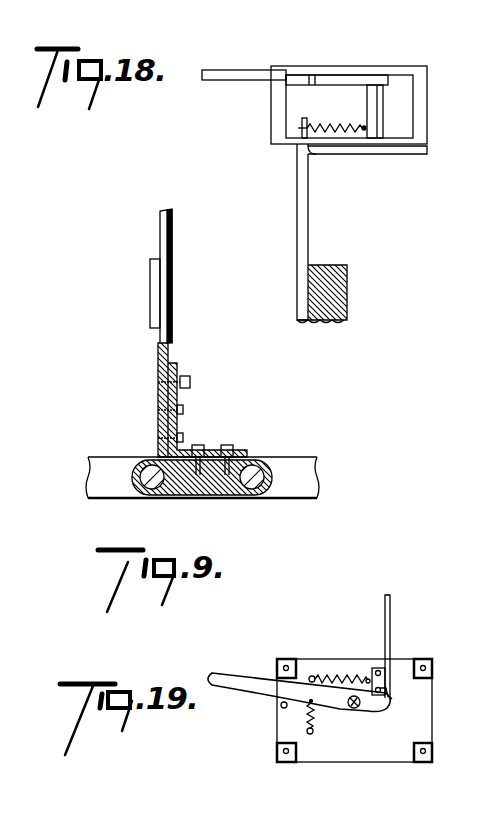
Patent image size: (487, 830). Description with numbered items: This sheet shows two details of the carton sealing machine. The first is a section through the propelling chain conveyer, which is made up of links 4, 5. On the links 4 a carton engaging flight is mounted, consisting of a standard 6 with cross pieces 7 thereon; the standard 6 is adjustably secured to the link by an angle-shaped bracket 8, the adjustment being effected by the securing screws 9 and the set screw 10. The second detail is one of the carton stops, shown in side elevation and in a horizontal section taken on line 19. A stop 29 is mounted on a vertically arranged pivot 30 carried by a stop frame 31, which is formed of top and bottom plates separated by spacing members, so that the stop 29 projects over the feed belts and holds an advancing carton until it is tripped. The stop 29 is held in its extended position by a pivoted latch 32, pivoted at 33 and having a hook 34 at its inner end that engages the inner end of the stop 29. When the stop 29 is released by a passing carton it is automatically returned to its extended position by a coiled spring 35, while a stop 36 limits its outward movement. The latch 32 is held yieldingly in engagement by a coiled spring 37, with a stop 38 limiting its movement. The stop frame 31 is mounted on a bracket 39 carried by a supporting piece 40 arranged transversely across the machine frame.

In FIG. 9, the links 4 is at (253, 459).
In FIG. 9, the links 5 is at (293, 466).
In FIG. 9, the standard 6 is at (167, 327).
In FIG. 9, the cross pieces 7 is at (155, 295).
In FIG. 9, the angle-shaped brackets 8 is at (182, 448).
In FIG. 9, the securing screws 9 is at (158, 438).
In FIG. 9, the set screw 10 is at (189, 379).
In FIG. 18, the section line 19— 19 is at (202, 70).
In FIG. 18, the stops 29 is at (383, 107).
In FIG. 19, the stops 29 is at (392, 614).
In FIG. 19, the pivots 30 is at (378, 664).
In FIG. 18, the stop frames 31 is at (282, 143).
In FIG. 19, the stop frames 31 is at (385, 754).
In FIG. 18, the pivoted latches 32 is at (237, 81).
In FIG. 19, the pivoted latches 32 is at (230, 685).
In FIG. 19, the pivot 33 is at (352, 708).
In FIG. 19, the hooks 34 is at (392, 699).
In FIG. 18, the coiled springs 35 is at (335, 128).
In FIG. 19, the coiled springs 35 is at (330, 674).
In FIG. 19, the stops 36 is at (386, 693).
In FIG. 19, the coiled springs 37 is at (308, 717).
In FIG. 19, the stops 38 is at (281, 708).
In FIG. 18, the brackets 39 is at (308, 192).
In FIG. 18, the supporting piece 40 is at (348, 283).